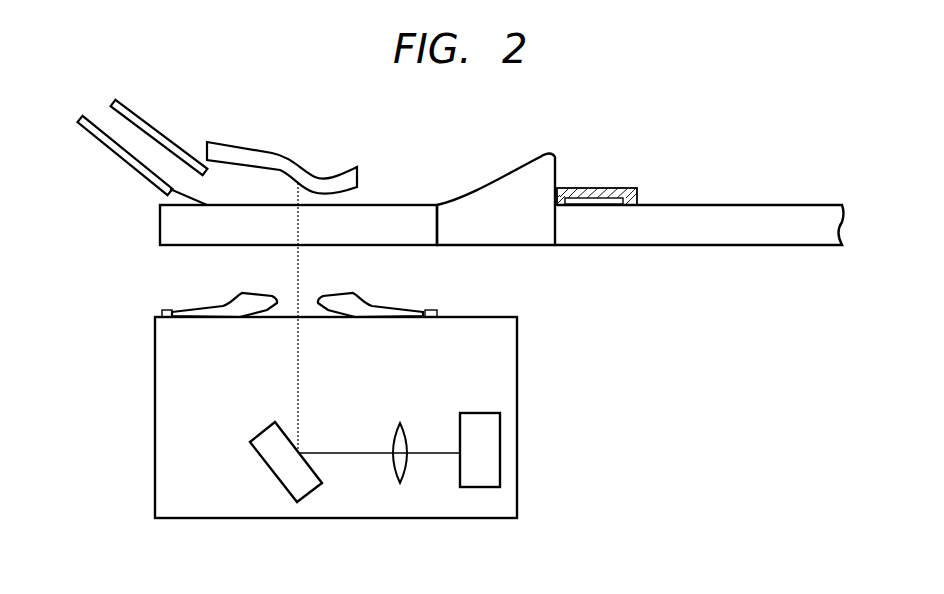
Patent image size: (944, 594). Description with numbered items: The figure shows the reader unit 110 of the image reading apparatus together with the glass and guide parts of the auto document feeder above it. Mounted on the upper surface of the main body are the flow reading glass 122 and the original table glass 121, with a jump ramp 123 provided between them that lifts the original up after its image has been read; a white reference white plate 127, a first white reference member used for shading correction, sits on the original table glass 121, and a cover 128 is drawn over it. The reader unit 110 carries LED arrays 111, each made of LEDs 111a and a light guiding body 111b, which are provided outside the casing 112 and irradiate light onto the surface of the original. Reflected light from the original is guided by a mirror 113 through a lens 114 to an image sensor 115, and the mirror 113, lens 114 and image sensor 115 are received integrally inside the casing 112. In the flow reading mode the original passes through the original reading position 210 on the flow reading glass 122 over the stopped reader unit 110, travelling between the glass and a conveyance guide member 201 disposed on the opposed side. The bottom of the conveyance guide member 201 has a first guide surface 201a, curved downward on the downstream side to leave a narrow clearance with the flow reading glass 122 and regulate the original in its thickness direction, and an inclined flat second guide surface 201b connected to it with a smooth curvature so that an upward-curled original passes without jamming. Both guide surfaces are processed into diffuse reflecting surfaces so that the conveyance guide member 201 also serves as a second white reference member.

The reader unit 110 is at (143, 509).
The LED arrays 111 is at (291, 309).
The LEDs 111a is at (161, 311).
The light guiding bodies 111b is at (260, 303).
The casing 112 is at (153, 427).
The mirror 113 is at (303, 485).
The lens 114 is at (410, 473).
The image sensor 115 is at (493, 467).
The original table glass 121 is at (782, 235).
The flow reading glass 122 is at (167, 228).
The jump ramp 123 is at (532, 238).
The white reference white plate 127 is at (613, 200).
The sensor cover 128 is at (598, 188).
The conveyance guide member 201 is at (318, 173).
The first guide surface 201a is at (353, 192).
The second guide surface 201b is at (275, 168).
The original reading position 210 is at (290, 196).